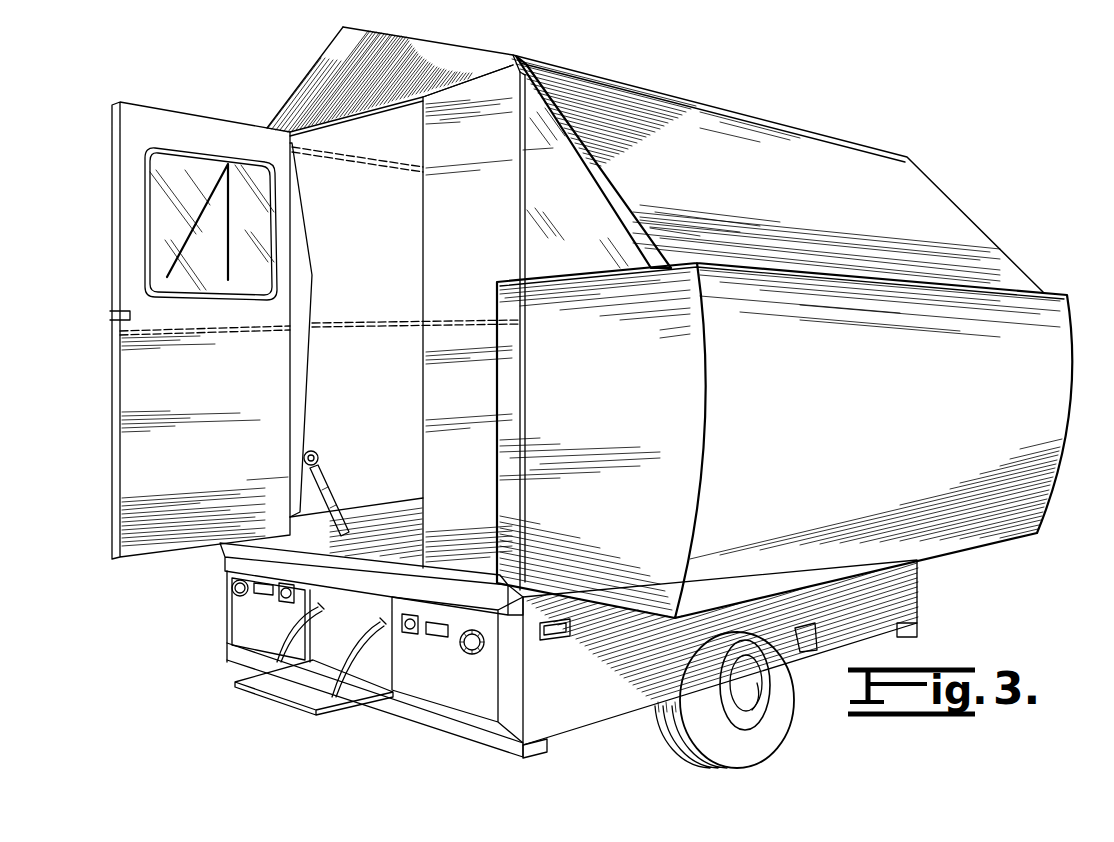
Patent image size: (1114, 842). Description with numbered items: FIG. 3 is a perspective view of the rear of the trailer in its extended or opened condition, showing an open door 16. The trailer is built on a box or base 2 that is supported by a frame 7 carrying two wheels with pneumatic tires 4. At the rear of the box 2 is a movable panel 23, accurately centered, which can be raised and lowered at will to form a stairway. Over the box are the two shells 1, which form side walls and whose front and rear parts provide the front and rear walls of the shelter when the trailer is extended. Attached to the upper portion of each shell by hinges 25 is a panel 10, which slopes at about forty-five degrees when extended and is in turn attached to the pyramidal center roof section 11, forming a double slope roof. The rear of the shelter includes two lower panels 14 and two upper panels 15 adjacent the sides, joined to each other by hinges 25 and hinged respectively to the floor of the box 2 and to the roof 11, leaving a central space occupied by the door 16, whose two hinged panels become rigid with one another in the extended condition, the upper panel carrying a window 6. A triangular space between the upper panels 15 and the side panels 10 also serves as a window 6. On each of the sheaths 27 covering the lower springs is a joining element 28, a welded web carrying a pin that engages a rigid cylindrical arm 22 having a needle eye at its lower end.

The shells 1 is at (1033, 512).
The box 2 is at (226, 605).
The pneumatic tires 4 is at (783, 690).
The window 6 is at (582, 212).
The frame 7 is at (537, 748).
The panel 10 is at (795, 153).
The center roof section 11 is at (412, 36).
The lower panels 14 is at (428, 416).
The upper panels 15 is at (483, 204).
The door 16 is at (128, 313).
The rigid cylindrical arm 22 is at (332, 493).
The movable panel 23 is at (283, 688).
The hinges 25 is at (483, 72).
The sheaths 27 is at (300, 408).
The joining element 28 is at (317, 452).